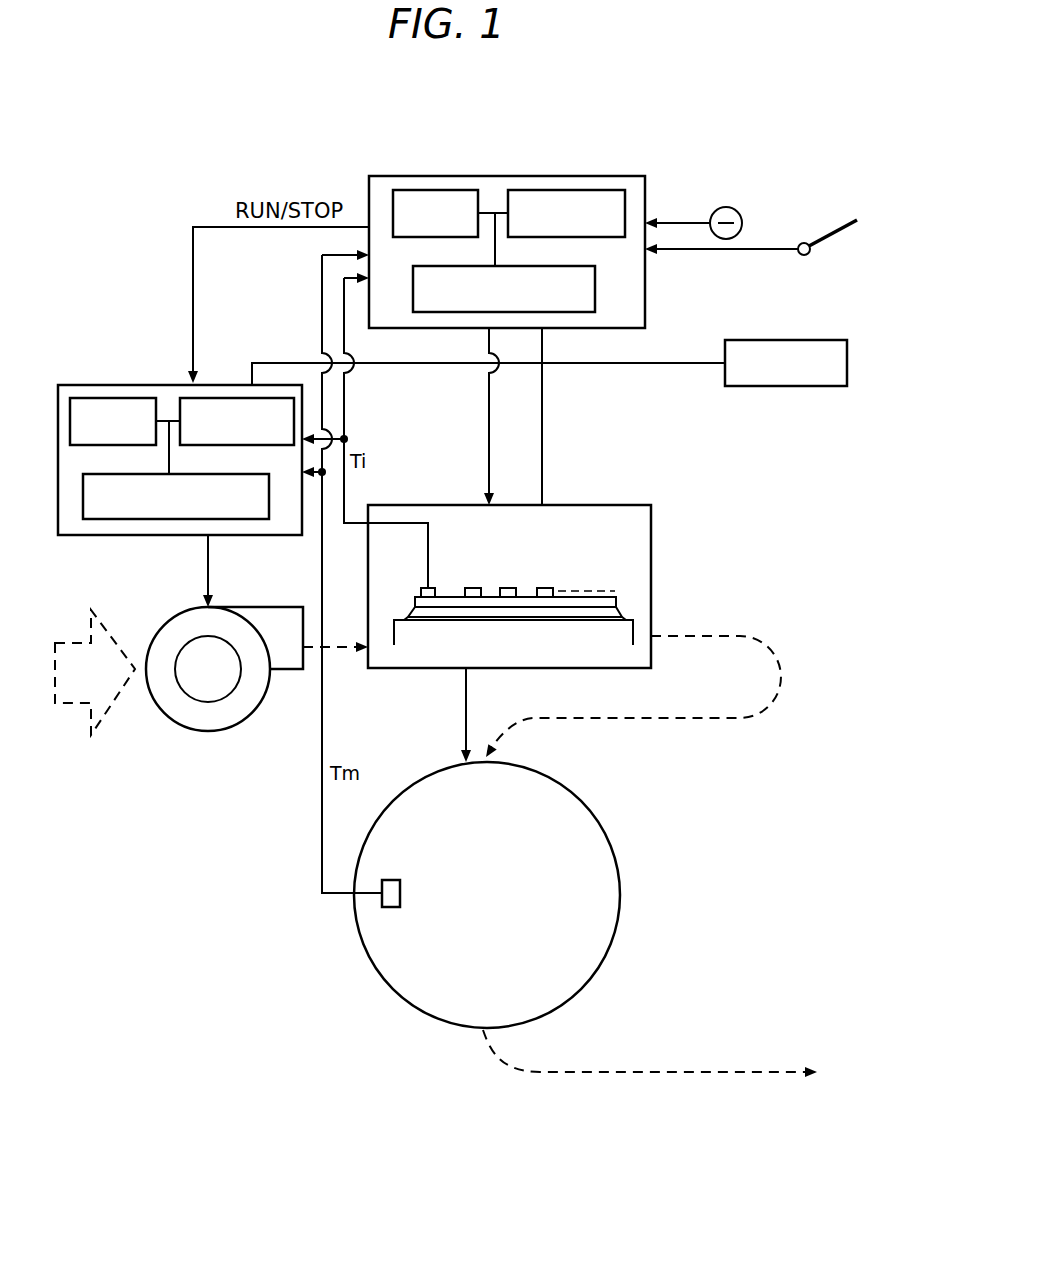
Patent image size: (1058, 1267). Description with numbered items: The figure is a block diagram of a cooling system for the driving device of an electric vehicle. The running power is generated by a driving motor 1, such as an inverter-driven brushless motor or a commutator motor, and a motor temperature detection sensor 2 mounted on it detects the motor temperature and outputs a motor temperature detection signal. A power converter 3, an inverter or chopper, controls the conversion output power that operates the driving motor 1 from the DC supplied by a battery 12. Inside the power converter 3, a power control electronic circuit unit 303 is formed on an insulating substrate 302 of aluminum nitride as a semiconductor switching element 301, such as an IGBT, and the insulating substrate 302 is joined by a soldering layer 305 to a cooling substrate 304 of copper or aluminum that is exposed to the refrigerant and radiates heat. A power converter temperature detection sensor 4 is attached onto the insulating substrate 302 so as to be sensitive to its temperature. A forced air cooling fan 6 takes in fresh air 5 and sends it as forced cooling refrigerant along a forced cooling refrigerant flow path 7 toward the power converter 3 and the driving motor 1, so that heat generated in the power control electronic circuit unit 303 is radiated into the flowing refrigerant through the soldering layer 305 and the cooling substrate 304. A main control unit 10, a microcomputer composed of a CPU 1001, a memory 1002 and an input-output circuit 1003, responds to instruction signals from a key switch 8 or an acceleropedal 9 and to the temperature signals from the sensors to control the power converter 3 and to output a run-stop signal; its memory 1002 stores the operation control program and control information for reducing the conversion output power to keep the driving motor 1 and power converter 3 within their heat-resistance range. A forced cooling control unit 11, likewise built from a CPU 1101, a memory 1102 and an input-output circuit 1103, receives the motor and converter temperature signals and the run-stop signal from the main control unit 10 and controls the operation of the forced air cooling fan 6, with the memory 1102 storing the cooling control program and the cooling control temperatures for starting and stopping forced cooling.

The driving motor 1 is at (618, 890).
The motor temperature detection sensor 2 is at (383, 898).
The power converter 3 is at (651, 512).
The power converter temperature detection sensor 4 is at (432, 588).
The fresh air 5 is at (66, 640).
The forced air cooling fan 6 is at (205, 731).
The forced cooling refrigerant flow path 7 is at (348, 652).
The key switch 8 is at (730, 207).
The acceleropedal 9 is at (831, 233).
The main control unit 10 is at (490, 176).
The forced cooling control unit 11 is at (155, 385).
The battery 12 is at (822, 340).
The semiconductor switching element 301 is at (553, 587).
The insulating substrate 302 is at (621, 611).
The power control electronic circuit unit 303 is at (600, 573).
The cooling substrate 304 is at (633, 632).
The soldering layer 305 is at (626, 619).
The CPU 1001 is at (430, 190).
The memory 1002 is at (563, 190).
The input-output circuit 1003 is at (595, 289).
The CPU 1101 is at (100, 398).
The memory 1102 is at (232, 398).
The input-output circuit 1103 is at (155, 519).